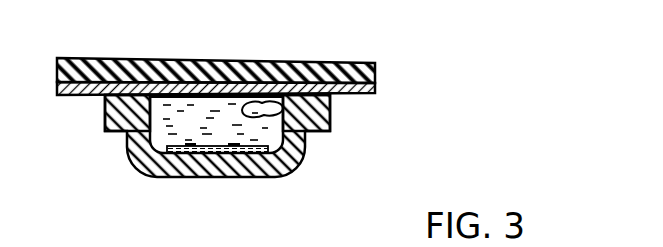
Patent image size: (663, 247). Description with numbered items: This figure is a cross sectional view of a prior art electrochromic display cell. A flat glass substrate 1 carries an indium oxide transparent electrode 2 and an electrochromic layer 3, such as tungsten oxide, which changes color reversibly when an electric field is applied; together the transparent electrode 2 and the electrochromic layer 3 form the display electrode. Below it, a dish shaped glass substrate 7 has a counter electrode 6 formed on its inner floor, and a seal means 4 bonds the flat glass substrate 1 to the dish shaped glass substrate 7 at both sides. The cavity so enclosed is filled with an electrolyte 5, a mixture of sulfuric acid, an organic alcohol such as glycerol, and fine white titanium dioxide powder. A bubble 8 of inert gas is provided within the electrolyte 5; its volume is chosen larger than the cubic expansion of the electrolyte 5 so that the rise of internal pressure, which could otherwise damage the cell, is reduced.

The flat glass substrate 1 is at (339, 62).
The indium oxide transparent electrode 2 is at (376, 92).
The electrochromic layer 3 is at (260, 61).
The seal means 4 is at (105, 98).
The electrolyte 5 is at (263, 120).
The counter electrode 6 is at (197, 155).
The dish shaped glass substrate 7 is at (235, 178).
The bubble 8 is at (287, 124).